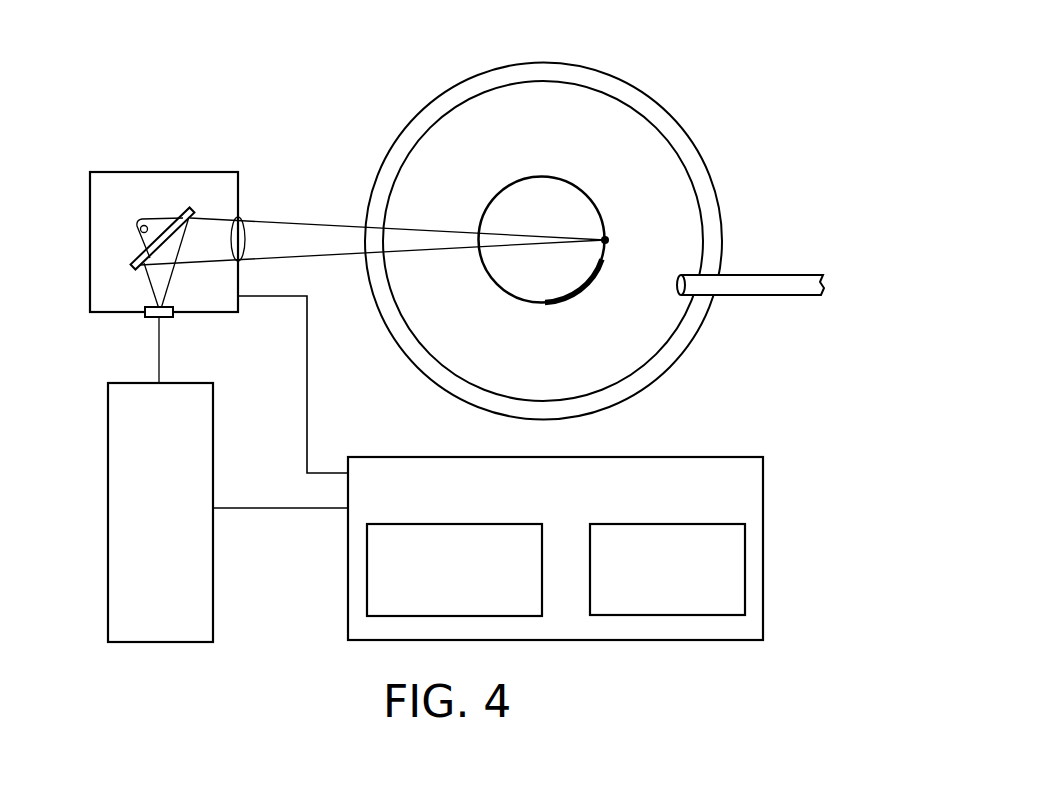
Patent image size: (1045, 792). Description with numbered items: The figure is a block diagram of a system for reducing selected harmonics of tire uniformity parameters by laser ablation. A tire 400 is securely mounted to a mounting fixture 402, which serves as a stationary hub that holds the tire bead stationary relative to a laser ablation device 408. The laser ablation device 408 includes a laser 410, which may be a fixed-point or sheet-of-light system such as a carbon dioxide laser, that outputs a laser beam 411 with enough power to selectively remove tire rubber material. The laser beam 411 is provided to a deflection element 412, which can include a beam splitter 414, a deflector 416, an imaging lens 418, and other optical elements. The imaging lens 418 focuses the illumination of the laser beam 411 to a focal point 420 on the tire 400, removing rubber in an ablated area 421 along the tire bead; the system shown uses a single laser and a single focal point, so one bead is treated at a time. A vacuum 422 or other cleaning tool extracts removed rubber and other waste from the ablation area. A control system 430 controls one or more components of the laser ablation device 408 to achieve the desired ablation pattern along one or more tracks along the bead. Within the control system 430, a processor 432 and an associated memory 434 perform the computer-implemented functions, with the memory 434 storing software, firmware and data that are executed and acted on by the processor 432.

The tire 400 is at (663, 163).
The mounting fixture 402 is at (638, 92).
The laser ablation device 408 is at (322, 192).
The laser 410 is at (198, 452).
The laser beam 411 is at (160, 343).
The deflection element 412 is at (205, 172).
The beam splitter 414 is at (152, 322).
The deflector 416 is at (190, 218).
The imaging lens 418 is at (243, 232).
The focal point 420 is at (607, 240).
The ablated area 421 is at (567, 303).
The vacuum 422 is at (760, 273).
The control system 430 is at (763, 487).
The processor 432 is at (367, 585).
The memory 434 is at (763, 587).